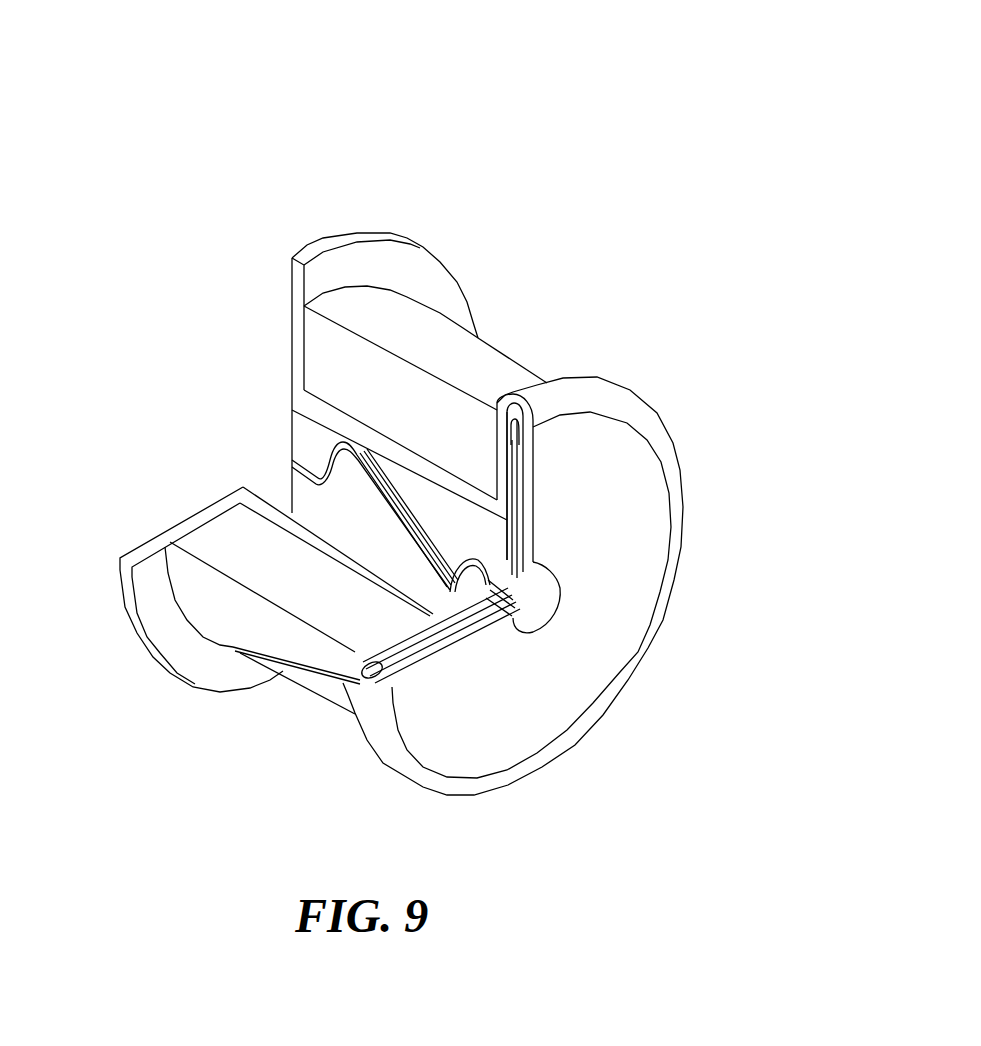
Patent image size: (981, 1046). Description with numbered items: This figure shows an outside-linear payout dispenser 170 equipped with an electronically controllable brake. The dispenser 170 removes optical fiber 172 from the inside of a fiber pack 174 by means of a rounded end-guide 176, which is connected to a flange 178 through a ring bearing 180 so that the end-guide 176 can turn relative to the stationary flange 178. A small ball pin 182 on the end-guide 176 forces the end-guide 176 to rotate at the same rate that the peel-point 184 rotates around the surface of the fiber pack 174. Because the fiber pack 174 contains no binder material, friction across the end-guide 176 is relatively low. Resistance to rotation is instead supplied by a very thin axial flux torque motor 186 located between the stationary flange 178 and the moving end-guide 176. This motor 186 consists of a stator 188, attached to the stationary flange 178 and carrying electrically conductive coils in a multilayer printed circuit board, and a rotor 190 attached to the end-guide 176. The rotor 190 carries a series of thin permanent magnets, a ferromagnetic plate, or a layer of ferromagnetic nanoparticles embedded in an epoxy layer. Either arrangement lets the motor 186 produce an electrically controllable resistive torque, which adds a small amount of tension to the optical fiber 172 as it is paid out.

The outside-linear payout dispenser 170 is at (720, 248).
The optical fiber 172 is at (228, 433).
The fiber pack 174 is at (368, 367).
The rounded end-guide 176 is at (695, 468).
The flange 178 is at (295, 339).
The ring bearing 180 is at (553, 407).
The small ball pin 182 is at (353, 682).
The peel-point 184 is at (237, 644).
The axial flux torque motor 186 is at (519, 535).
The stator 188 is at (519, 471).
The rotor 190 is at (521, 514).